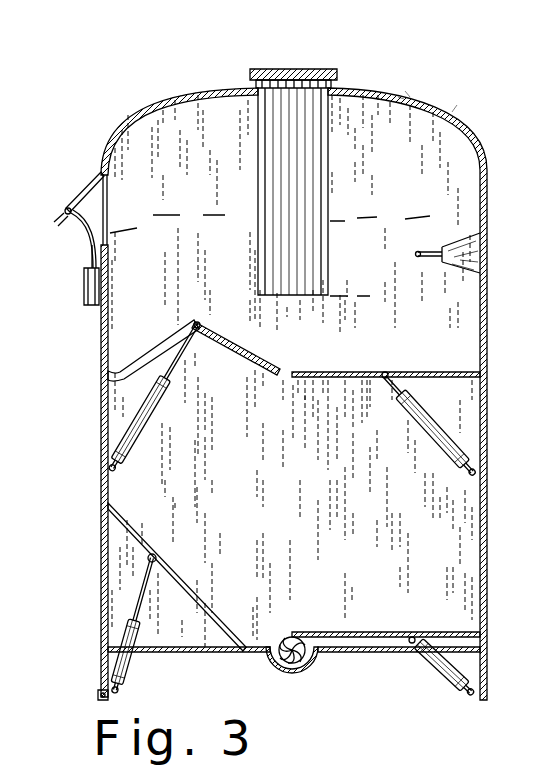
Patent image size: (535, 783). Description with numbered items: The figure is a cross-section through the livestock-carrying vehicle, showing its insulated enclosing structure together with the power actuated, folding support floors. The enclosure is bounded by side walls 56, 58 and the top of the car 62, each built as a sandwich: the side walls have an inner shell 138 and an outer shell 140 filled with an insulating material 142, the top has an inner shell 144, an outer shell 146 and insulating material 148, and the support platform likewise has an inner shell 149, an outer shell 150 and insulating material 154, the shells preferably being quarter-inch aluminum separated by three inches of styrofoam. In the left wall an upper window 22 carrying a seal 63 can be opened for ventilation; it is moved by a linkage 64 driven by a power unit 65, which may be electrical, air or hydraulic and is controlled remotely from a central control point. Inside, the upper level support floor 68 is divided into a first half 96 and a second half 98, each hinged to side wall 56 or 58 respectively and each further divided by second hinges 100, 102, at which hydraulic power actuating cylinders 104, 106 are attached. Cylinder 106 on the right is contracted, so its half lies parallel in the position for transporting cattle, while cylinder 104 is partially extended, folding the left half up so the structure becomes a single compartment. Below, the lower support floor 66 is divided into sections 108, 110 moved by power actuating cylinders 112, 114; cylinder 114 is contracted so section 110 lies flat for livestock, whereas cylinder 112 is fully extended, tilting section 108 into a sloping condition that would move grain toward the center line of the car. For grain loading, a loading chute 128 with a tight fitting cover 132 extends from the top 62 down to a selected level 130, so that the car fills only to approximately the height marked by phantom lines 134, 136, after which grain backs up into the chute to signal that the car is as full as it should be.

The upper window 22 is at (96, 178).
The side wall 56 is at (103, 408).
The side wall 58 is at (426, 394).
The top of the car 62 is at (352, 80).
The seal 63 is at (74, 228).
The linkage 64 is at (86, 272).
The power unit 65 is at (95, 302).
The lower support floor 66 is at (257, 638).
The upper level support floor 68 is at (450, 362).
The first half 96 is at (172, 344).
The second half 98 is at (328, 371).
The second hinge 100 is at (198, 323).
The second hinge 102 is at (383, 378).
The hydraulic power actuating cylinder 104 is at (152, 408).
The hydraulic power actuating cylinder 106 is at (432, 447).
The section of lower support floor 108 is at (195, 595).
The section of lower support floor 110 is at (382, 632).
The power actuating cylinder 112 is at (116, 680).
The power actuating cylinder 114 is at (432, 660).
The loading chute 128 is at (328, 213).
The selected level 130 is at (344, 294).
The tight fitting cover 132 is at (298, 70).
The phantom line 134 is at (162, 215).
The phantom line 136 is at (418, 218).
The inner shell 138 is at (107, 470).
The outer shell 140 is at (103, 540).
The insulating material 142 is at (103, 571).
The inner shell 144 is at (398, 100).
The outer shell 146 is at (413, 96).
The insulating material 148 is at (454, 110).
The inner shell 149 is at (190, 624).
The outer shell 150 is at (210, 653).
The insulating material 154 is at (256, 655).